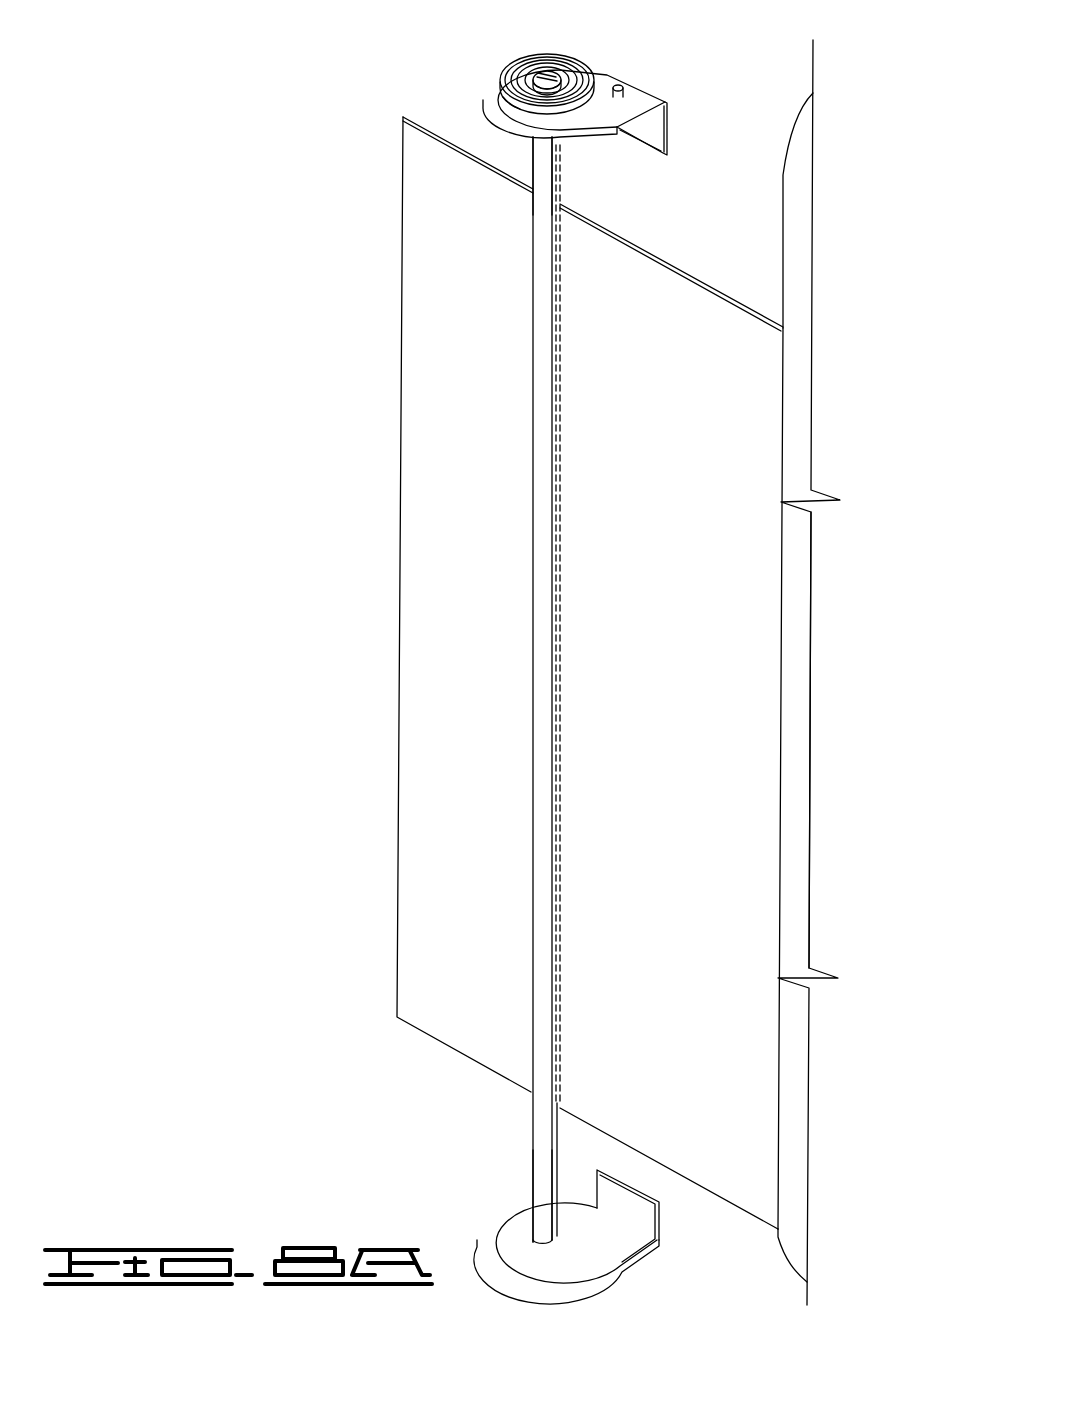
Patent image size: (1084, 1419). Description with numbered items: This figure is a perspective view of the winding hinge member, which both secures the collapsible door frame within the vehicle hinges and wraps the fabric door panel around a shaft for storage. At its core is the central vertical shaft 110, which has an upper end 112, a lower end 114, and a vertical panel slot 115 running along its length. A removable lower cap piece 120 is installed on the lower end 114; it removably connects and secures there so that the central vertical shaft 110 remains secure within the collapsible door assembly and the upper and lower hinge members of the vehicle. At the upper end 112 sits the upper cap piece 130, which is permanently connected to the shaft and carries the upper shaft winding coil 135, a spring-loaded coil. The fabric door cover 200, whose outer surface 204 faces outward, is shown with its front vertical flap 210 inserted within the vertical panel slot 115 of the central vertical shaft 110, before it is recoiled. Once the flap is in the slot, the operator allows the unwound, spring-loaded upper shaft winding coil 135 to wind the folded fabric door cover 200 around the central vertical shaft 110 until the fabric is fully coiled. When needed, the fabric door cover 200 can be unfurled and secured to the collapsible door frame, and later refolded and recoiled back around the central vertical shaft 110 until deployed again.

The central vertical shaft 110 is at (537, 676).
The upper end 112 is at (535, 162).
The lower end 114 is at (537, 1218).
The vertical panel slot 115 is at (557, 192).
The removable lower cap piece 120 is at (487, 1232).
The upper cap piece 130 is at (668, 112).
The upper shaft winding coil 135 is at (578, 58).
The fabric door cover 200 is at (770, 612).
The outer surface 204 is at (763, 933).
The front vertical flap 210 is at (430, 385).